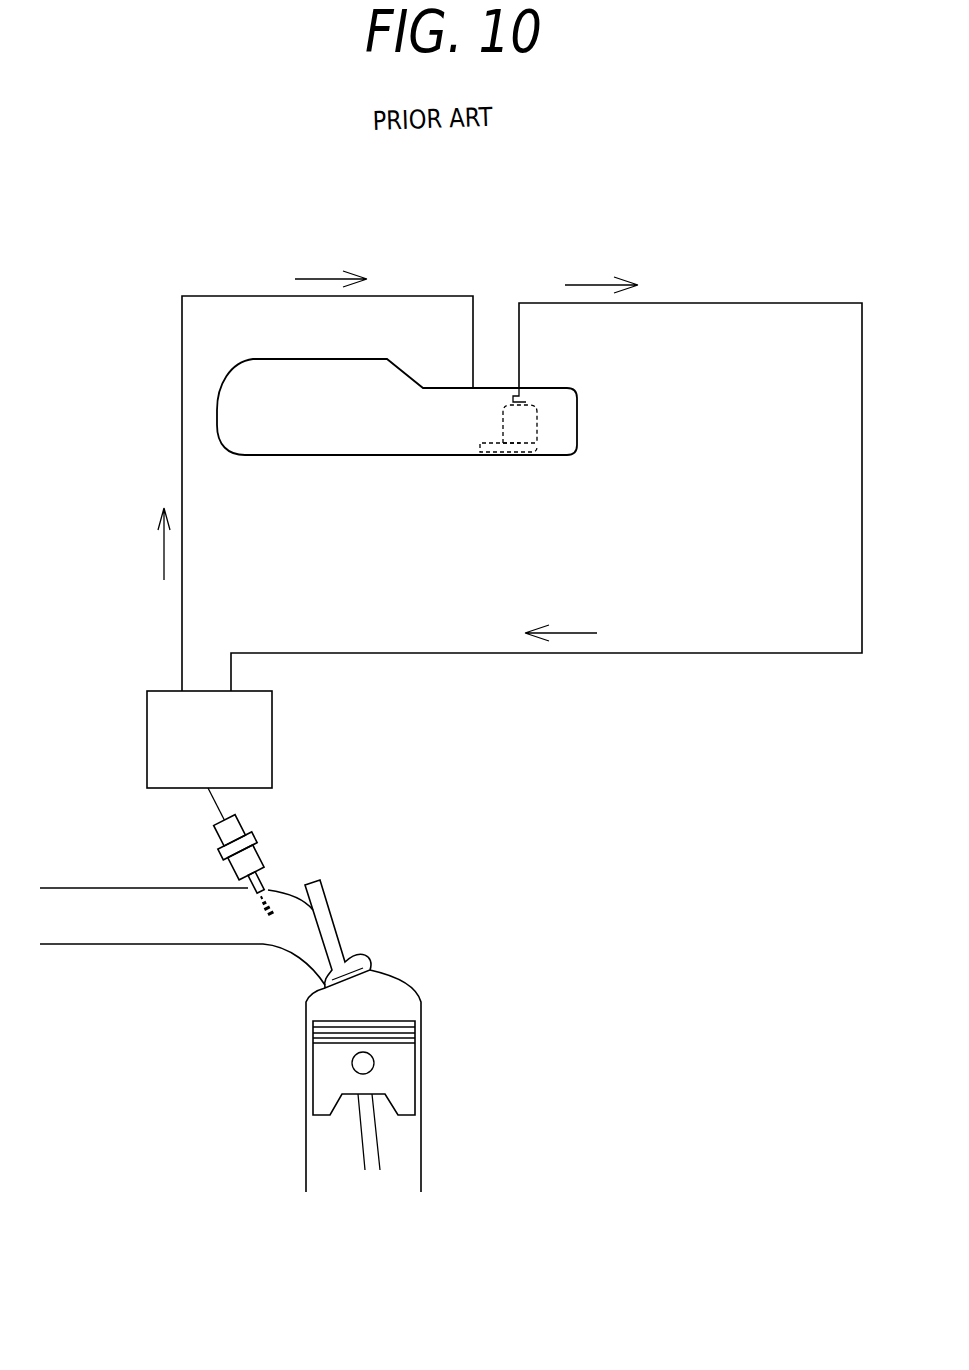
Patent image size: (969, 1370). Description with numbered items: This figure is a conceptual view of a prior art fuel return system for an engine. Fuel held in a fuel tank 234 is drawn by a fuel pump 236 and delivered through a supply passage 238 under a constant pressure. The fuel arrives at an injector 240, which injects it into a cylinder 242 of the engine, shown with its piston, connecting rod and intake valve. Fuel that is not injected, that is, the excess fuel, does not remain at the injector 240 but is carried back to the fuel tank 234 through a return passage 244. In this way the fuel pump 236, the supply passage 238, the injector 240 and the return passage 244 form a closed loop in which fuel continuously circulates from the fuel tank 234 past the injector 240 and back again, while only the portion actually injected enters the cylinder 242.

The fuel tank 234 is at (362, 440).
The fuel pump 236 is at (528, 457).
The supply passage 238 is at (762, 655).
The injector 240 is at (280, 841).
The cylinder 242 is at (415, 1145).
The return passage 244 is at (182, 450).